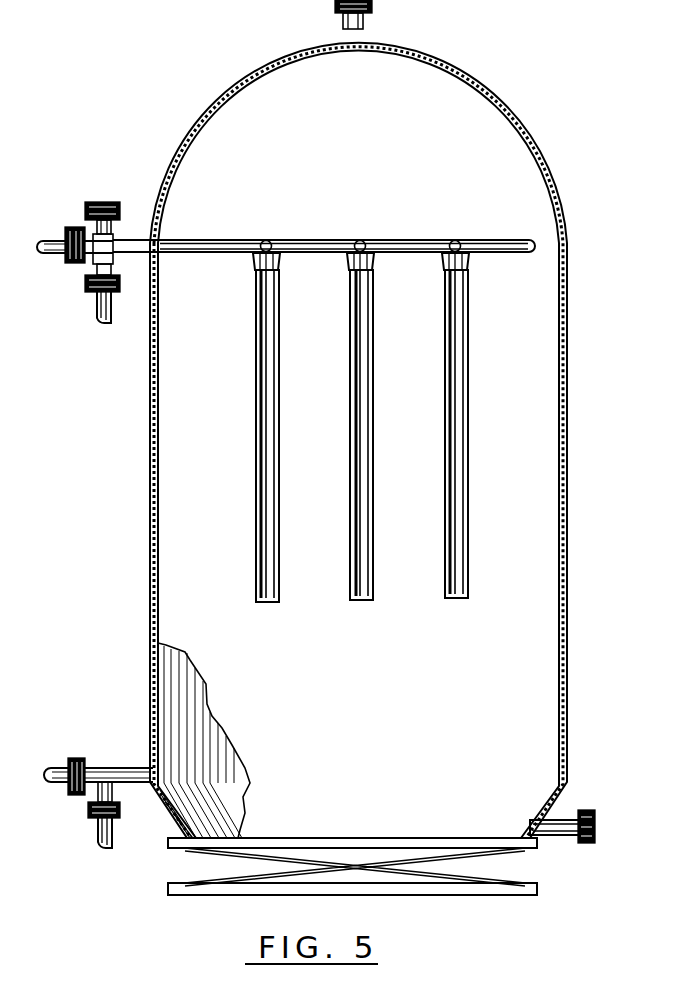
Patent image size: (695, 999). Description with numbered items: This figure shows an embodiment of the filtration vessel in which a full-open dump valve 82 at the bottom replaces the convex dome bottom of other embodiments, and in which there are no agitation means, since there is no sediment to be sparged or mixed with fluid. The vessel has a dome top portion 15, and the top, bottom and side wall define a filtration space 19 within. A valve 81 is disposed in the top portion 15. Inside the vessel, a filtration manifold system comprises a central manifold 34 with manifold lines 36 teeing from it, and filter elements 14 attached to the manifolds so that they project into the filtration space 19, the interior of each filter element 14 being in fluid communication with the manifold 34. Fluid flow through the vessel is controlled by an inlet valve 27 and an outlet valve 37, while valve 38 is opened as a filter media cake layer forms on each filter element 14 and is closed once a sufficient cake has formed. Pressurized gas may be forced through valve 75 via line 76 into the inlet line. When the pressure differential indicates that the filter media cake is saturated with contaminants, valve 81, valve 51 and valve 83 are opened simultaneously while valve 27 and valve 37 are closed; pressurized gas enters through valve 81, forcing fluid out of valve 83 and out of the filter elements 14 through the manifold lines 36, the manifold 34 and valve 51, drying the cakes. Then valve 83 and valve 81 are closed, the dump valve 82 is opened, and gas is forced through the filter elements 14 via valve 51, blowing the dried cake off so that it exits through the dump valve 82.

The filter elements 14 is at (372, 400).
The dome top portion 15 is at (532, 128).
The filtration space 19 is at (357, 644).
The valve 27 is at (80, 758).
The central manifold 34 is at (375, 238).
The manifold lines 36 is at (266, 240).
The valve 37 is at (73, 266).
The valve 38 is at (102, 203).
The valve 51 is at (87, 291).
The valve 75 is at (88, 813).
The line 76 is at (96, 837).
The valve 81 is at (373, 5).
The full-open dump valve 82 is at (537, 884).
The valve 83 is at (596, 820).